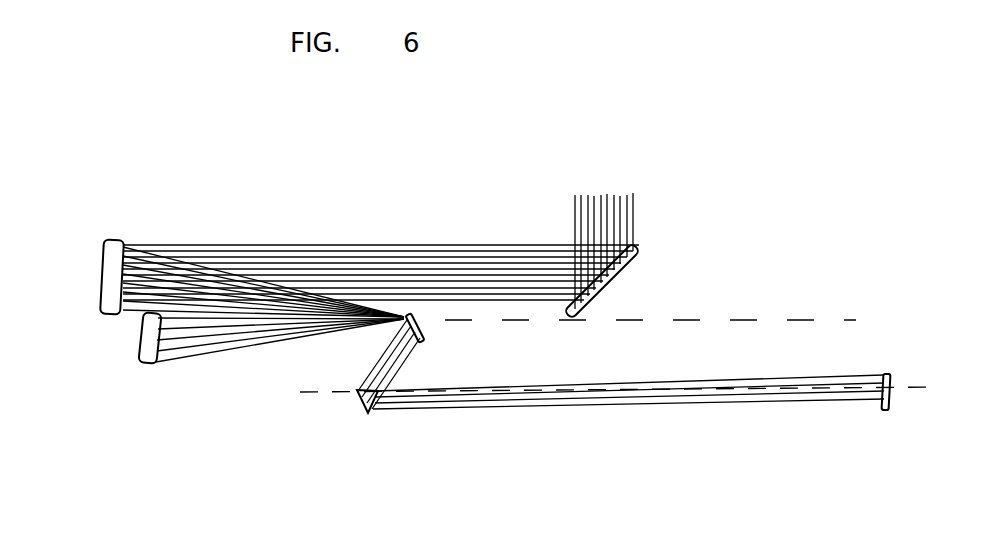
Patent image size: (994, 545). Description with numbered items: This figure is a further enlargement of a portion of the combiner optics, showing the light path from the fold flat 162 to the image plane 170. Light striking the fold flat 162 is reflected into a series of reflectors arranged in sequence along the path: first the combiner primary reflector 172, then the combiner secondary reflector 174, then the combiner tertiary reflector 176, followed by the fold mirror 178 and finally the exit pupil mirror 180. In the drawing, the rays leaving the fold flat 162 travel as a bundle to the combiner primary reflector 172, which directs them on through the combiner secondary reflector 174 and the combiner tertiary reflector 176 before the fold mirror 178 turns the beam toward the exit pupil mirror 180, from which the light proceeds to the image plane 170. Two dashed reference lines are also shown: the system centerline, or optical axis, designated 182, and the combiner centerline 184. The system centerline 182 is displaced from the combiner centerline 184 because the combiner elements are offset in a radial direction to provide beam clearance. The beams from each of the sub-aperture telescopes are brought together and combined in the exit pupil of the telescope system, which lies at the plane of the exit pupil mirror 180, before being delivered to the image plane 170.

The fold flat 162 is at (627, 260).
The image plane 170 is at (882, 390).
The combiner primary reflector 172 is at (100, 267).
The combiner secondary reflector 174 is at (408, 317).
The combiner tertiary reflector 176 is at (140, 357).
The fold mirror 178 is at (425, 332).
The exit pupil mirror 180 is at (360, 397).
The system centerline (optical axis) 182 is at (303, 392).
The combiner centerline 184 is at (807, 320).